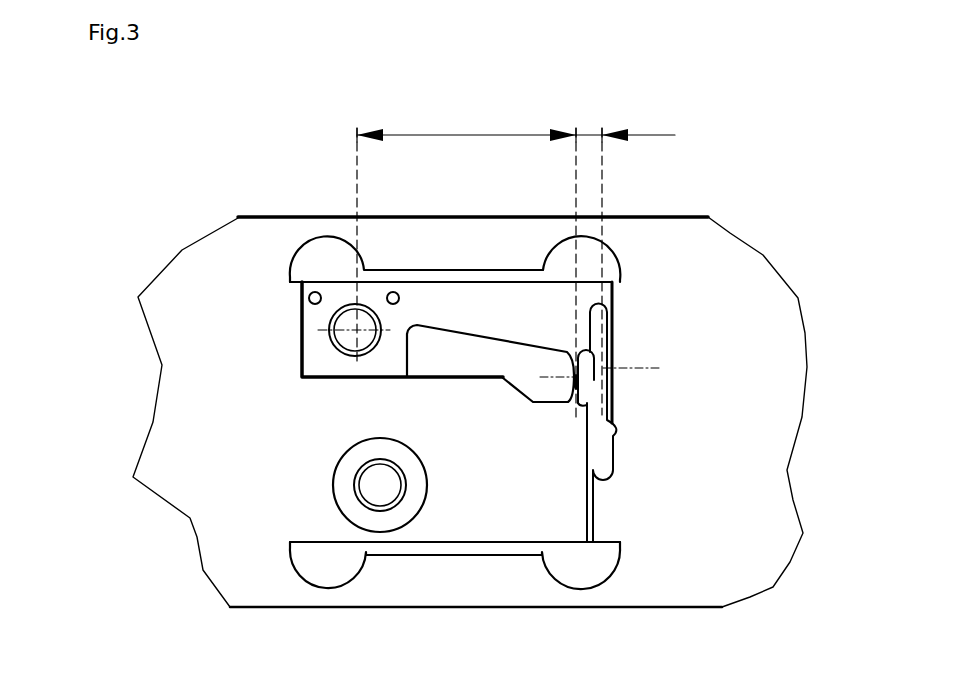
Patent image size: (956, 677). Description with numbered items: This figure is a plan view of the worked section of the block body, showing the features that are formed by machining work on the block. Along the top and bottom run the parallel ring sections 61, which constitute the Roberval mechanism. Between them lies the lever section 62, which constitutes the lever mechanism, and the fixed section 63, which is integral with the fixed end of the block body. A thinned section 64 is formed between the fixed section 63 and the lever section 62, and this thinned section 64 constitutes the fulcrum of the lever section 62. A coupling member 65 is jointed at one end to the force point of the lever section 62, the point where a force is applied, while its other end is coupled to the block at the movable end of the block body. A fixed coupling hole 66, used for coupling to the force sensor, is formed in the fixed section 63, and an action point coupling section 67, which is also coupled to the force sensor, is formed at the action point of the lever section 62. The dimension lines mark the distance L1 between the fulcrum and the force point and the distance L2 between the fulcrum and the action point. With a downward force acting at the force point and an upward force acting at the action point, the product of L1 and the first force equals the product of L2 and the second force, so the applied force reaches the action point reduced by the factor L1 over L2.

The parallel ring sections 61 is at (437, 232).
The lever section 62 is at (502, 303).
The fixed section 63 is at (475, 500).
The thinned section 64 is at (573, 379).
The coupling member 65 is at (612, 370).
The fixed coupling hole 66 is at (328, 487).
The action point coupling section 67 is at (340, 303).
The distance between the fulcrum and the force point L1 is at (585, 134).
The distance between the fulcrum and the action point L2 is at (436, 133).